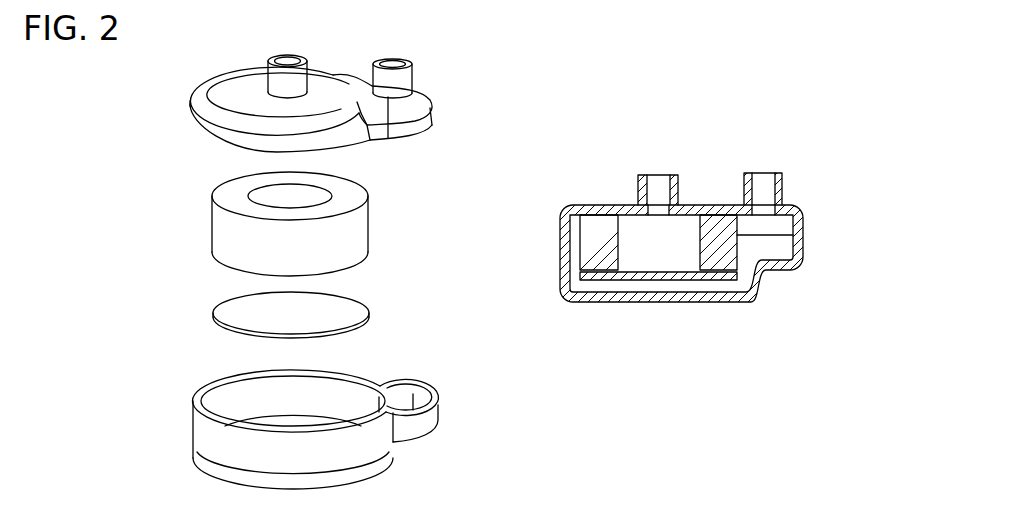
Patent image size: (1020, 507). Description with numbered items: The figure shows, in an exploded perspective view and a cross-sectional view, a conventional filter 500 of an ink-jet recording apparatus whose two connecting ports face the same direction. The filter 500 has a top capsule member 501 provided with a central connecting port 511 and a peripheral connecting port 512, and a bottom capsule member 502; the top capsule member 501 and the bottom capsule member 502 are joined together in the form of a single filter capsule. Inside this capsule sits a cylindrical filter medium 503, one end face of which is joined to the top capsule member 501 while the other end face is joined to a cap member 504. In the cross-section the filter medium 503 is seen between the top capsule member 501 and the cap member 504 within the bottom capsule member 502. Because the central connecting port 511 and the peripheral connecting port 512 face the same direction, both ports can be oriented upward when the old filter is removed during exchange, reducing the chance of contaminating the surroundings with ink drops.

The filter 500 is at (710, 163).
The top capsule member 501 is at (207, 112).
The bottom capsule member 502 is at (205, 425).
The cylindrical filter medium 503 is at (218, 232).
The cap member 504 is at (218, 324).
The central connecting port 511 is at (640, 190).
The peripheral connecting port 512 is at (785, 183).